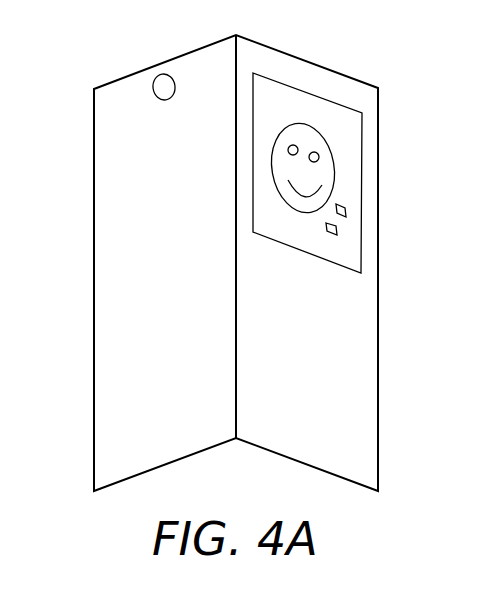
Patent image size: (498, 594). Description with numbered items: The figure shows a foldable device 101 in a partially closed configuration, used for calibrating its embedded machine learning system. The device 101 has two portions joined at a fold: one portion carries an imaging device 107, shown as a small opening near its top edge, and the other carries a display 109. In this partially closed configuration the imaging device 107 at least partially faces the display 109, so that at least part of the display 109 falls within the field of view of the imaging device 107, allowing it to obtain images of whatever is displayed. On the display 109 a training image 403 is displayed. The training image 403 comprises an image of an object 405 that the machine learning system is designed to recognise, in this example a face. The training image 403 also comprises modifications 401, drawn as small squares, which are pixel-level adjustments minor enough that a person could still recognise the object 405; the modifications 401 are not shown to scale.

The device 101 is at (112, 263).
The imaging device 107 is at (160, 75).
The display 109 is at (362, 128).
The training image 403 is at (347, 168).
The object 405 is at (315, 128).
The modifications 401 is at (339, 228).